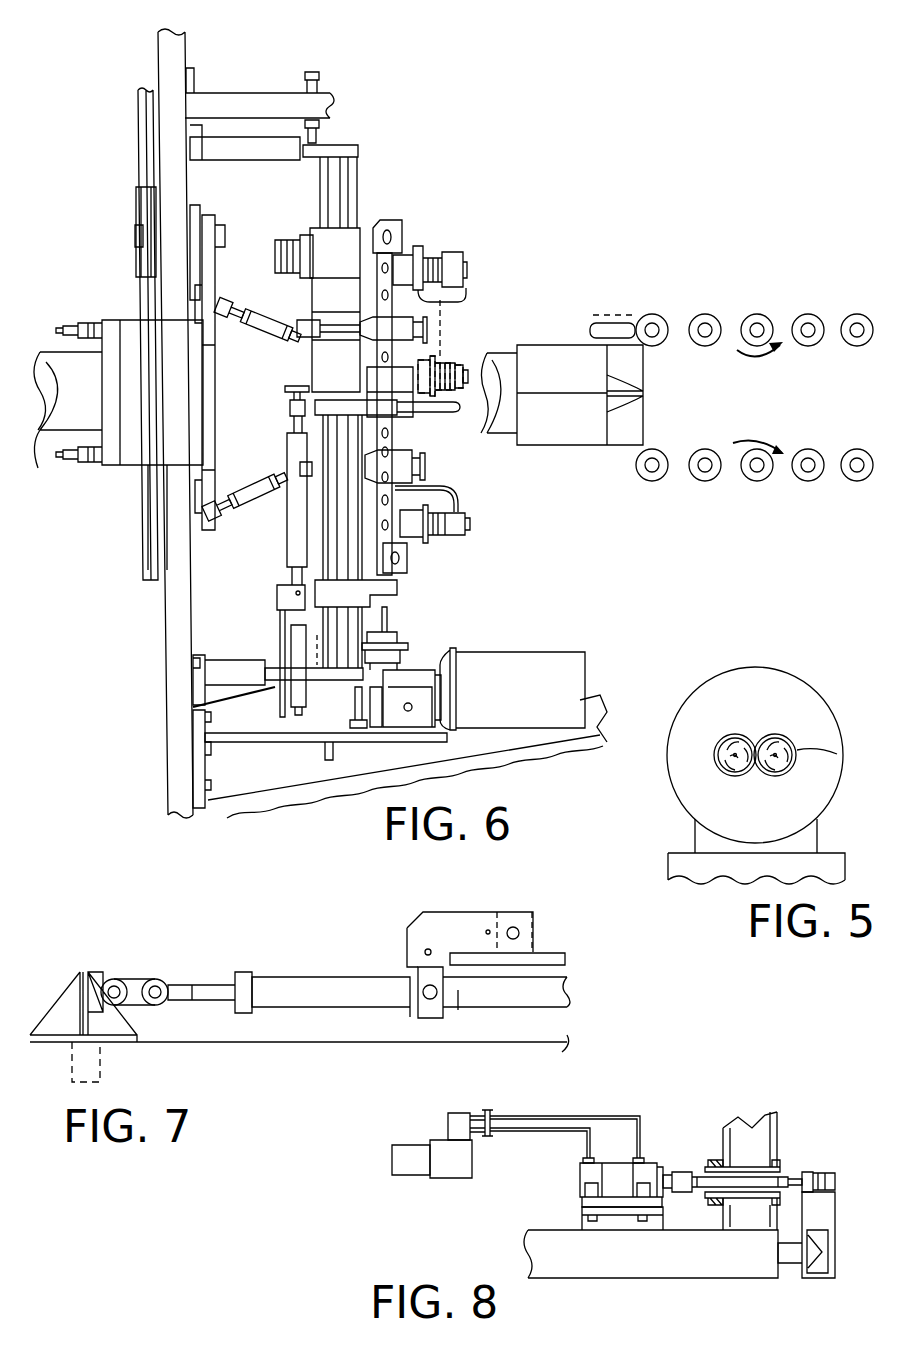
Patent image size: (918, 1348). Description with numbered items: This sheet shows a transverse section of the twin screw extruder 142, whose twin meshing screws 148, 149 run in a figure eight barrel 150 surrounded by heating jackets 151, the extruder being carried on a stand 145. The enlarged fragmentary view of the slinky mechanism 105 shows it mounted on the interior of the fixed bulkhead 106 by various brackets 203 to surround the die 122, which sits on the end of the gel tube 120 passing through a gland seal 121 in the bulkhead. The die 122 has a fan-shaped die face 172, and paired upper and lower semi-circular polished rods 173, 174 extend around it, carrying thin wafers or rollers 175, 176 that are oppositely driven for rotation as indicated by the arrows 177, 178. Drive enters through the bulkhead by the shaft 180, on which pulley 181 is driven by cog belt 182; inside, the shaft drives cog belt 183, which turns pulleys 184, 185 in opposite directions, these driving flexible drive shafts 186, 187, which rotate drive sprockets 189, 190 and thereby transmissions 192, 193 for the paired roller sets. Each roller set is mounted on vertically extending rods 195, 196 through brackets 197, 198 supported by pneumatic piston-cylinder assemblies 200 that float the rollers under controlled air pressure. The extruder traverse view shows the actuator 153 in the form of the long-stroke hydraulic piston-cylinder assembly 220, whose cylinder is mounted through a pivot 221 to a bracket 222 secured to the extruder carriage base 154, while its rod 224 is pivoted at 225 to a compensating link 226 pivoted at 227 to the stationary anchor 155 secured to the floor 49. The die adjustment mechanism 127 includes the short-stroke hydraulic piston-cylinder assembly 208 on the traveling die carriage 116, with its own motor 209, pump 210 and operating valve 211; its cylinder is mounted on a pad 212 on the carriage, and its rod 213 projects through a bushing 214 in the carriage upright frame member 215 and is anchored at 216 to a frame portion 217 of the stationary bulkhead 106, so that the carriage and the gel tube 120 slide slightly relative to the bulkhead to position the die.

In FIG. 6, the fixed bulkhead 106 is at (188, 48).
In FIG. 8, the fixed bulkhead 106 is at (840, 1263).
In FIG. 6, the brackets 203 is at (248, 100).
In FIG. 6, the cog belt 182 is at (140, 134).
In FIG. 6, the shaft 180 is at (135, 239).
In FIG. 6, the pulley 181 is at (148, 248).
In FIG. 6, the cog belt 183 is at (212, 268).
In FIG. 6, the pulley 184 is at (214, 293).
In FIG. 6, the flexible drive shaft 186 is at (253, 318).
In FIG. 6, the flexible drive shaft 187 is at (263, 492).
In FIG. 6, the pulley 185 is at (224, 514).
In FIG. 6, the gel tube 120 is at (70, 412).
In FIG. 6, the gland seal 121 is at (130, 467).
In FIG. 6, the pneumatic piston-cylinder assemblies 200 is at (295, 555).
In FIG. 6, the vertically extending rod 195 is at (325, 219).
In FIG. 6, the vertically extending rod 196 is at (348, 175).
In FIG. 6, the bracket 197 is at (342, 243).
In FIG. 6, the transmission 192 is at (427, 254).
In FIG. 6, the slinky mechanism 105 is at (474, 228).
In FIG. 6, the drive sprocket 189 is at (423, 331).
In FIG. 6, the wafers or rollers 175 is at (450, 363).
In FIG. 6, the polished rods 173 is at (467, 375).
In FIG. 6, the polished rods 174 is at (453, 415).
In FIG. 6, the bracket 198 is at (360, 432).
In FIG. 6, the drive sprocket 190 is at (428, 465).
In FIG. 6, the transmission 193 is at (433, 540).
In FIG. 6, the extrusion die 122 is at (573, 433).
In FIG. 6, the die face 172 is at (635, 370).
In FIG. 6, the wafers or rollers 176 is at (703, 478).
In FIG. 6, the arrow 177 is at (760, 357).
In FIG. 6, the arrow 178 is at (736, 439).
In FIG. 5, the heating jackets 151 is at (839, 786).
In FIG. 5, the twin screw extruder 142 is at (810, 727).
In FIG. 5, the stand 145 is at (832, 867).
In FIG. 5, the meshing screw 148 is at (725, 735).
In FIG. 5, the figure eight barrel 150 is at (770, 732).
In FIG. 5, the meshing screw 149 is at (837, 754).
In FIG. 7, the floor 49 is at (533, 1042).
In FIG. 7, the stationary anchor 155 is at (75, 967).
In FIG. 7, the pivot 227 is at (114, 985).
In FIG. 7, the pivot 225 is at (163, 983).
In FIG. 7, the compensating link 226 is at (132, 982).
In FIG. 7, the rod 224 is at (217, 992).
In FIG. 7, the hydraulic piston-cylinder assembly actuator 220 is at (358, 995).
In FIG. 7, the pivot 221 is at (418, 990).
In FIG. 7, the bracket 222 is at (445, 912).
In FIG. 7, the bracket 154 is at (545, 957).
In FIG. 7, the actuator 153 is at (265, 953).
In FIG. 8, the traveling die carriage 116 is at (692, 1263).
In FIG. 8, the motor 209 is at (410, 1177).
In FIG. 8, the pump 210 is at (462, 1162).
In FIG. 8, the operating valve 211 is at (460, 1120).
In FIG. 8, the hydraulic piston-cylinder assembly 208 is at (647, 1165).
In FIG. 8, the pad 212 is at (582, 1223).
In FIG. 8, the rod 213 is at (753, 1175).
In FIG. 8, the carriage upright frame member 215 is at (748, 1128).
In FIG. 8, the bushing 214 is at (748, 1168).
In FIG. 8, the anchor 216 is at (837, 1167).
In FIG. 8, the frame portion 217 is at (823, 1215).
In FIG. 8, the die adjustment mechanism 127 is at (656, 1120).